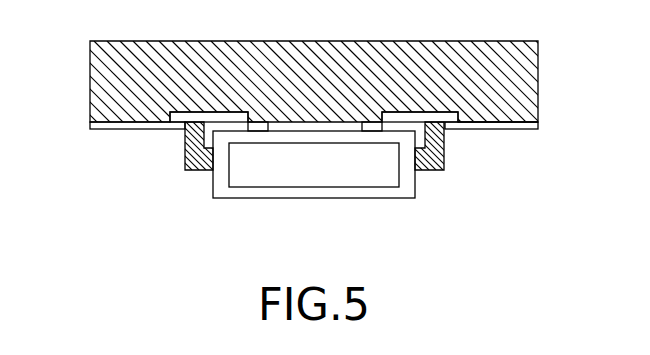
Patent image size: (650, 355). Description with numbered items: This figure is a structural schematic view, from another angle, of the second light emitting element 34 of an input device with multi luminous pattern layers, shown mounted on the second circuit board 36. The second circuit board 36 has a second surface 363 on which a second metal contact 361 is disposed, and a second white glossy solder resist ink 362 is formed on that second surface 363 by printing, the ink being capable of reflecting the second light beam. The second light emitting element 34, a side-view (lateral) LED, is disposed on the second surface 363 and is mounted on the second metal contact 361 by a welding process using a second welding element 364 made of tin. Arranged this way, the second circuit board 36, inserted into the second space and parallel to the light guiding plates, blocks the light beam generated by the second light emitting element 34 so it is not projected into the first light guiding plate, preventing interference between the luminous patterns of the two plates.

The second circuit board 36 is at (110, 93).
The second metal contact 361 is at (182, 115).
The second white glossy solder resist ink 362 is at (517, 127).
The second surface 363 is at (483, 123).
The second welding element 364 is at (184, 165).
The second light emitting element 34 is at (313, 172).